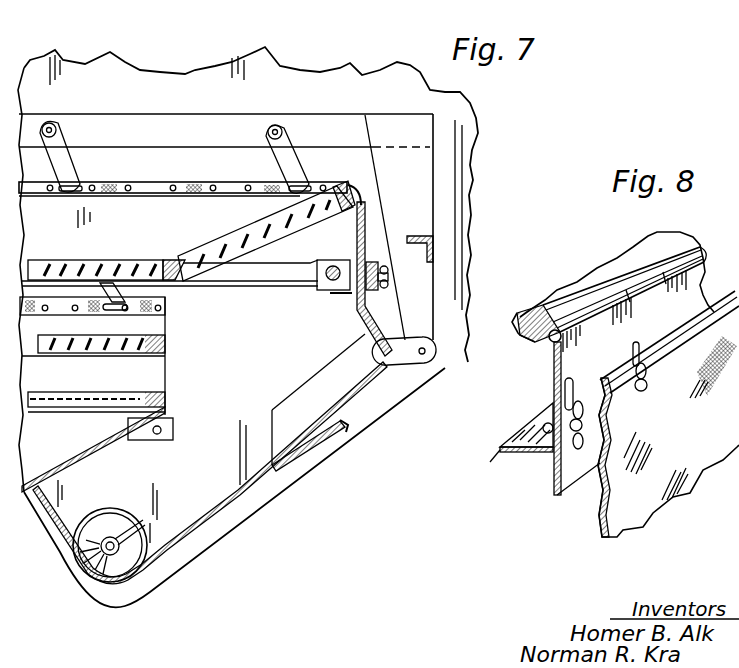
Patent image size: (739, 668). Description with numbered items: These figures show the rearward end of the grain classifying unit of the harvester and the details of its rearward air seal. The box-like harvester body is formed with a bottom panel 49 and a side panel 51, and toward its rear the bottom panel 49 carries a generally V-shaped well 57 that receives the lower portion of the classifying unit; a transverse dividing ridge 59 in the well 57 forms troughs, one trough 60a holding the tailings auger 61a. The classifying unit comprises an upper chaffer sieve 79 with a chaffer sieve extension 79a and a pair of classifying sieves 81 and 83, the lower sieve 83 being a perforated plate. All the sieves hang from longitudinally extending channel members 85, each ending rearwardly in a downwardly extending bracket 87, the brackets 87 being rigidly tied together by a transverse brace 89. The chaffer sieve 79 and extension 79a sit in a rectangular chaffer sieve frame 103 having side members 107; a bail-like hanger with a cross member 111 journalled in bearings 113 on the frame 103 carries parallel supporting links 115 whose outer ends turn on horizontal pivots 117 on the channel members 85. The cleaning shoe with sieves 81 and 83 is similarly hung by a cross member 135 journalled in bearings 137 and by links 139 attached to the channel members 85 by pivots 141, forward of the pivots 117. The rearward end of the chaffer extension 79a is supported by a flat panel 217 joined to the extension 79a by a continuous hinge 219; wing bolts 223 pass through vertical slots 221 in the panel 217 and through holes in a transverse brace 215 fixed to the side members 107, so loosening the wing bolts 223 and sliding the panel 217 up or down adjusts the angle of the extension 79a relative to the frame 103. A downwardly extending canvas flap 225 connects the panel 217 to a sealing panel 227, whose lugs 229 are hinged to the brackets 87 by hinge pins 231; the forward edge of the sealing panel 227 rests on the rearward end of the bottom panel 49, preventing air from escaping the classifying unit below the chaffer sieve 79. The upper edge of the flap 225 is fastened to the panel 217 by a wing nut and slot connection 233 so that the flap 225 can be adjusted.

In FIG. 7, the bottom panel 49 is at (222, 515).
In FIG. 7, the side panel 51 is at (333, 87).
In FIG. 7, the V-shaped well 57 is at (248, 498).
In FIG. 7, the dividing ridge 59 is at (33, 497).
In FIG. 7, the trough 60a is at (105, 590).
In FIG. 7, the tailings auger 61a is at (128, 565).
In FIG. 7, the chaffer sieve 79 is at (85, 270).
In FIG. 7, the chaffer sieve extension 79a is at (230, 242).
In FIG. 8, the chaffer sieve extension 79a is at (548, 300).
In FIG. 7, the classifying sieve 81 is at (140, 335).
In FIG. 7, the classifying sieve 83 is at (130, 395).
In FIG. 7, the channel member 85 is at (200, 125).
In FIG. 7, the bracket 87 is at (425, 170).
In FIG. 7, the brace 89 is at (433, 238).
In FIG. 7, the chaffer sieve frame 103 is at (263, 278).
In FIG. 7, the side member 107 is at (90, 182).
In FIG. 7, the cross member 111 is at (330, 276).
In FIG. 7, the bearing 113 is at (323, 291).
In FIG. 7, the supporting link 115 is at (290, 152).
In FIG. 7, the pivot 117 is at (278, 126).
In FIG. 7, the cross member 135 is at (157, 434).
In FIG. 7, the bearing 137 is at (175, 428).
In FIG. 7, the supporting link 139 is at (70, 155).
In FIG. 7, the pivot 141 is at (50, 125).
In FIG. 7, the brace 215 is at (345, 302).
In FIG. 8, the brace 215 is at (500, 462).
In FIG. 7, the panel 217 is at (368, 256).
In FIG. 8, the panel 217 is at (572, 367).
In FIG. 8, the hinge 219 is at (548, 342).
In FIG. 8, the slot 221 is at (570, 366).
In FIG. 8, the wing bolt 223 is at (553, 463).
In FIG. 7, the canvas flap 225 is at (375, 322).
In FIG. 8, the canvas flap 225 is at (631, 517).
In FIG. 7, the sealing panel 227 is at (355, 403).
In FIG. 7, the lug 229 is at (407, 365).
In FIG. 7, the hinge pin 231 is at (435, 355).
In FIG. 8, the wing nut and slot connection 233 is at (637, 346).